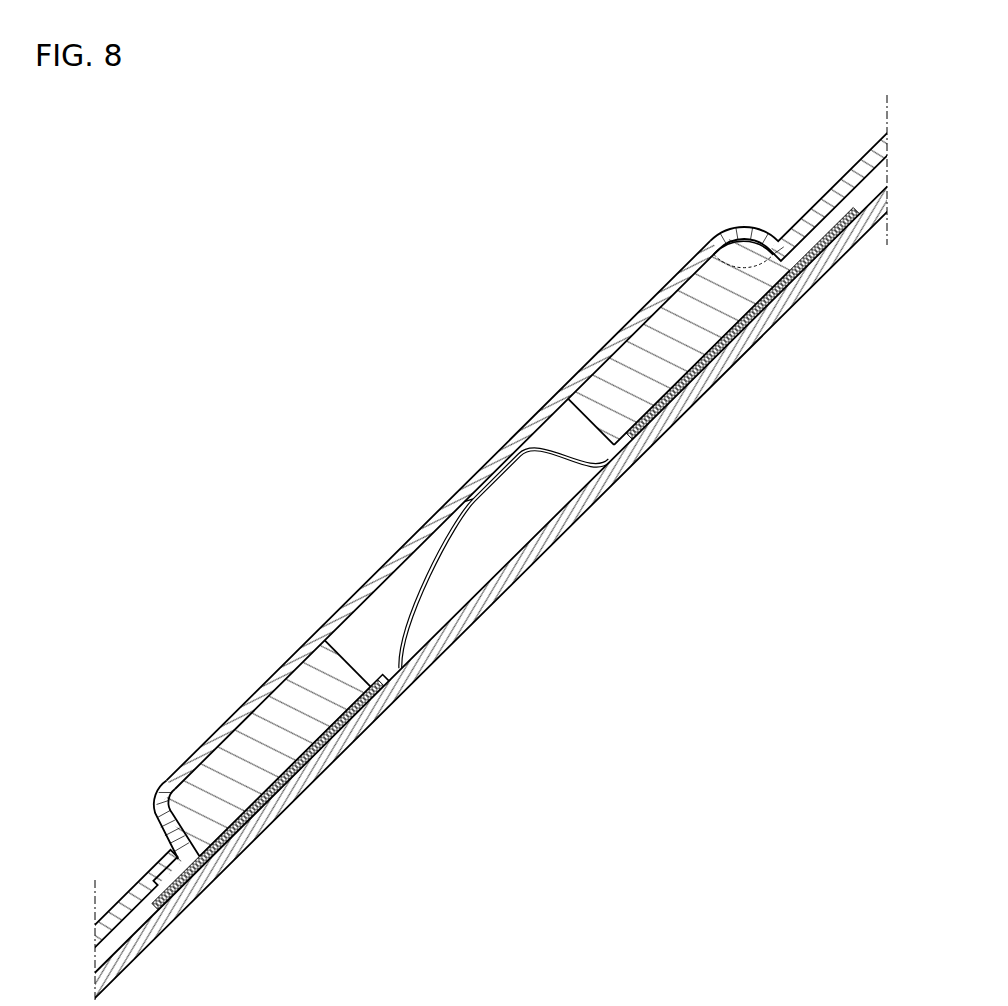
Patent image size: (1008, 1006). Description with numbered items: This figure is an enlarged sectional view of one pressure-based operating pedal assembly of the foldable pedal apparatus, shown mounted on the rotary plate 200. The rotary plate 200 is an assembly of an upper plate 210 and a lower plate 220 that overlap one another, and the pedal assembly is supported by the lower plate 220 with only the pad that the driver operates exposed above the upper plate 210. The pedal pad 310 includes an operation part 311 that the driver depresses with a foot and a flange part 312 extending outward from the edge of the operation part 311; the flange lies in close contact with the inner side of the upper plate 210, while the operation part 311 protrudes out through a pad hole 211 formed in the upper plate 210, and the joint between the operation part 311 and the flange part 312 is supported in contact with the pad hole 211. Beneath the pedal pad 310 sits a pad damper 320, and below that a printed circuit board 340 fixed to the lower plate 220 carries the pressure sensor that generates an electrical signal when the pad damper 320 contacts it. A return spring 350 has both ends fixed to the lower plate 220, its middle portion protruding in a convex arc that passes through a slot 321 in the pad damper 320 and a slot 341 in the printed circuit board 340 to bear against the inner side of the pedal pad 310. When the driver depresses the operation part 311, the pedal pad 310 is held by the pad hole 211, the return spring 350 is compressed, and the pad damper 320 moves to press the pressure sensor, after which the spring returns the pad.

The rotary plate 200 is at (492, 562).
The upper plate 210 is at (138, 885).
The pad hole 211 is at (740, 240).
The lower plate 220 is at (122, 953).
The pedal pad 310 is at (536, 463).
The operation part 311 is at (243, 712).
The flange part 312 is at (776, 246).
The pad damper 320 is at (472, 550).
The slot 321 is at (357, 660).
The printed circuit board 340 is at (681, 394).
The slot 341 is at (372, 702).
The return spring 350 is at (482, 497).